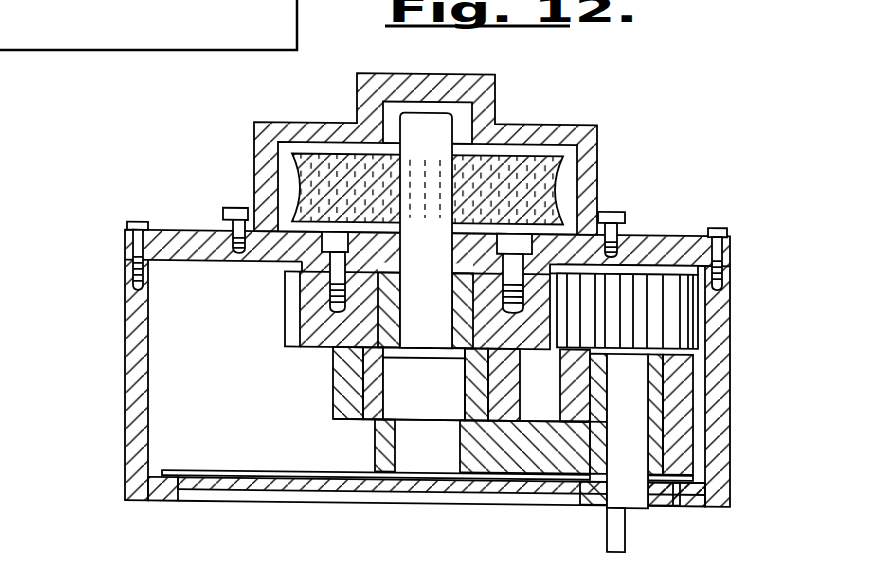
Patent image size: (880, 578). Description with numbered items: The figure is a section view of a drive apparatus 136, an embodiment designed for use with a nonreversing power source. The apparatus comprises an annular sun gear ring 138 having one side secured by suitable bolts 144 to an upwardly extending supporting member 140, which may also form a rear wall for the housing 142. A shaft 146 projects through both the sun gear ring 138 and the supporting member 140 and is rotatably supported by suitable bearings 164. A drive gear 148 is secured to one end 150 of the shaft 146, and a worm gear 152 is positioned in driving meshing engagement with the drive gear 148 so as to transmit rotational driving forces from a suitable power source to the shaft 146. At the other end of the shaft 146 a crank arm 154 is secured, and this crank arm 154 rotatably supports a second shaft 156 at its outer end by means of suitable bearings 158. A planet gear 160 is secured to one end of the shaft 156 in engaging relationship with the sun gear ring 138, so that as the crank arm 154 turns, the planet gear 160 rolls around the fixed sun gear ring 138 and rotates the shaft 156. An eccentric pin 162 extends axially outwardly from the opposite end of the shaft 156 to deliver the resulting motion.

The drive apparatus 136 is at (75, 247).
The annular sun gear ring 138 is at (300, 346).
The upwardly extending supporting member 140 is at (657, 234).
The housing 142 is at (125, 342).
The bolts 144 is at (300, 239).
The shaft 146 is at (442, 303).
The drive gear 148 is at (552, 153).
The end of shaft 150 is at (425, 122).
The worm gear 152 is at (500, 111).
The crank arm 154 is at (530, 462).
The shaft 156 is at (642, 430).
The bearings 158 is at (650, 370).
The planet gear 160 is at (663, 290).
The eccentric pin 162 is at (625, 530).
The bearings 164 is at (498, 76).